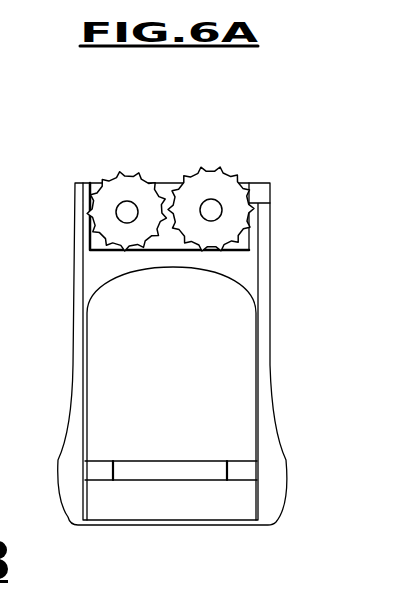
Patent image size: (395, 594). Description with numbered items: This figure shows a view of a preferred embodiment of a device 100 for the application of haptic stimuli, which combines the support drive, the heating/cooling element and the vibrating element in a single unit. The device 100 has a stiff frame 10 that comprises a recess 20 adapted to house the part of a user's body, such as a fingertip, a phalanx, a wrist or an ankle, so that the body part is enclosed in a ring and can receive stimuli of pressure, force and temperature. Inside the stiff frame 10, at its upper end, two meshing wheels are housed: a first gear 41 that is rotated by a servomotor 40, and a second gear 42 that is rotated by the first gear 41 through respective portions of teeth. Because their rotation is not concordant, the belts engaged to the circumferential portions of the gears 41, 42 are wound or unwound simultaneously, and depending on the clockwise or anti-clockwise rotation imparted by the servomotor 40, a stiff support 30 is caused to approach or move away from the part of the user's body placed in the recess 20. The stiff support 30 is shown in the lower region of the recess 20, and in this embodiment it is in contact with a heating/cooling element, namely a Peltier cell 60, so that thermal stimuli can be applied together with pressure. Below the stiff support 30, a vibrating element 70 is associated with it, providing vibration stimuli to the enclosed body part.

The device 100 is at (295, 165).
The stiff frame 10 is at (82, 277).
The recess 20 is at (190, 398).
The stiff support 30 is at (240, 470).
The servomotor 40 is at (164, 179).
The first gear 41 is at (110, 185).
The second gear 42 is at (224, 177).
The Peltier cell 60 is at (135, 463).
The vibrating element 70 is at (212, 507).